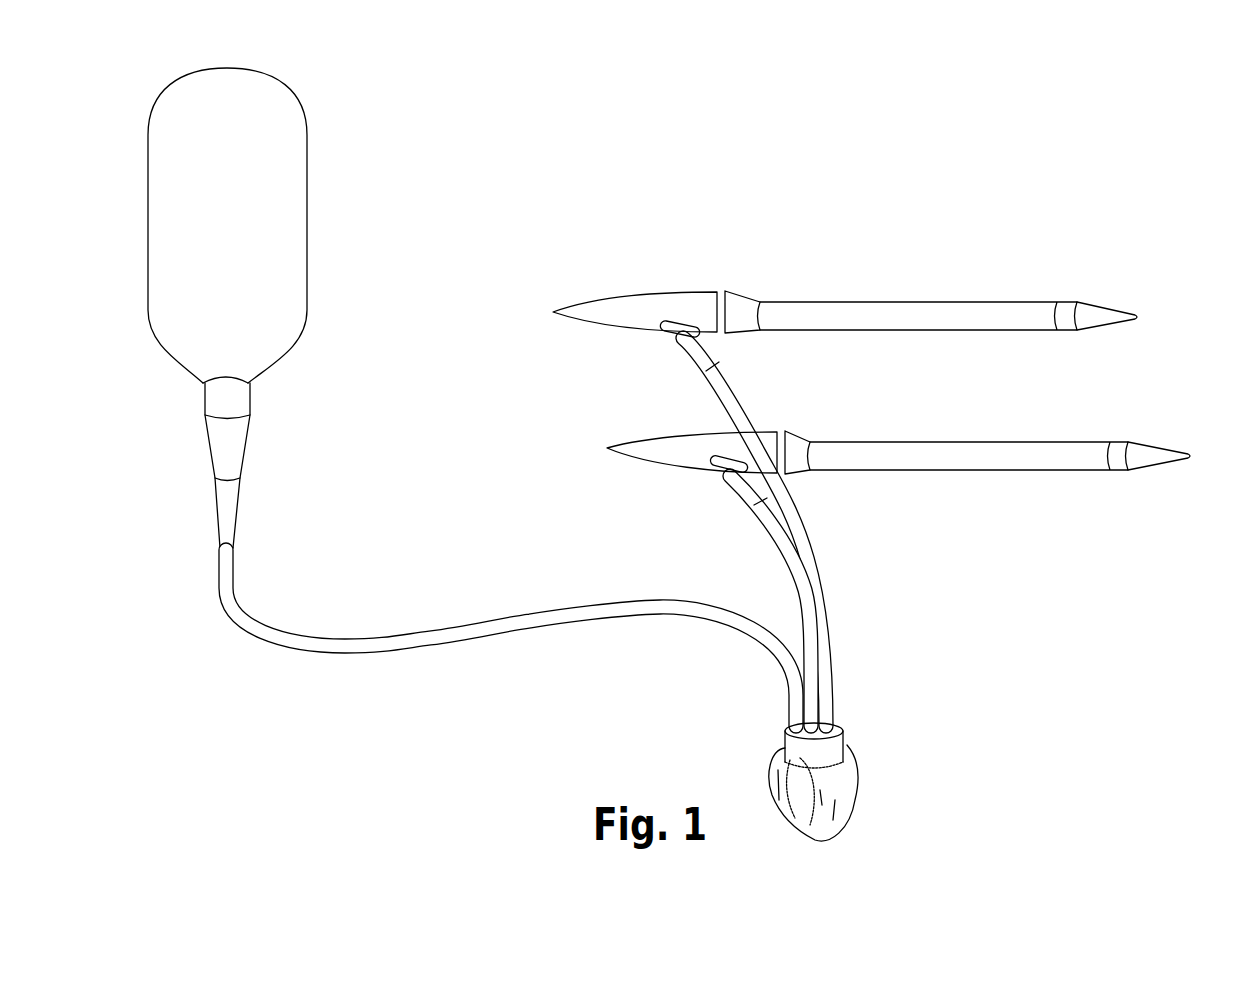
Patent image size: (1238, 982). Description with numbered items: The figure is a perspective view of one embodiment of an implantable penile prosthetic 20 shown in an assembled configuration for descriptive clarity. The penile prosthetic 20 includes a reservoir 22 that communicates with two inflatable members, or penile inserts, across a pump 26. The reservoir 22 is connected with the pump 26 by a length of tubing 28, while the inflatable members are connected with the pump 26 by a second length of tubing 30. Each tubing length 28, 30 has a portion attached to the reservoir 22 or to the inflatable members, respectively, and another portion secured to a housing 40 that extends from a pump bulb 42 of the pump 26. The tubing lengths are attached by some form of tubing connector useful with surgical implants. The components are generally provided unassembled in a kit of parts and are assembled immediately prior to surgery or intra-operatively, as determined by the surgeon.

The implantable penile prosthetic 20 is at (798, 140).
The reservoir 22 is at (306, 341).
The pump 26 is at (813, 771).
The tubing 28 is at (735, 620).
The tubing 30 is at (822, 618).
The housing 40 is at (837, 723).
The pump bulb 42 is at (850, 765).